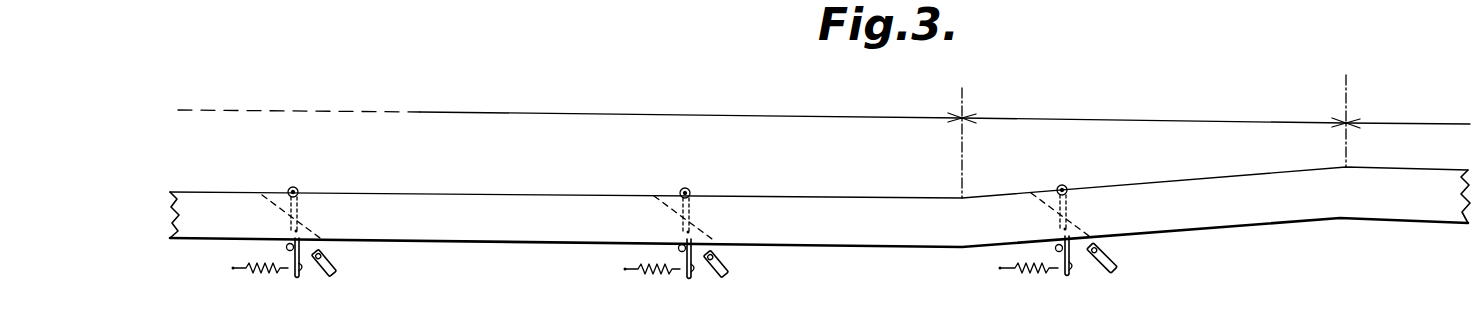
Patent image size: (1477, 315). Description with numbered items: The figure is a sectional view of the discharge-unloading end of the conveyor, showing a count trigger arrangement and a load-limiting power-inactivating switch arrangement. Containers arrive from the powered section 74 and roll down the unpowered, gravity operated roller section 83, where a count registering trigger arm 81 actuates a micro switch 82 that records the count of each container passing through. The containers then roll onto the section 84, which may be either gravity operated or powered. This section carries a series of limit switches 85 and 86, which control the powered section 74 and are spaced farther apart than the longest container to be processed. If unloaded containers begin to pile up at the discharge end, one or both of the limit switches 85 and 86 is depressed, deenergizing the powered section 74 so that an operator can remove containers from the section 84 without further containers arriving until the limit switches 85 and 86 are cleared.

The powered section 74 is at (1408, 117).
The count registering trigger arm 81 is at (1066, 185).
The micro switch 82 is at (1113, 270).
The gravity operated roller section 83 is at (1154, 110).
The roller or powered section 84 is at (691, 107).
The limit switch 85 is at (298, 186).
The limit switch 86 is at (690, 187).